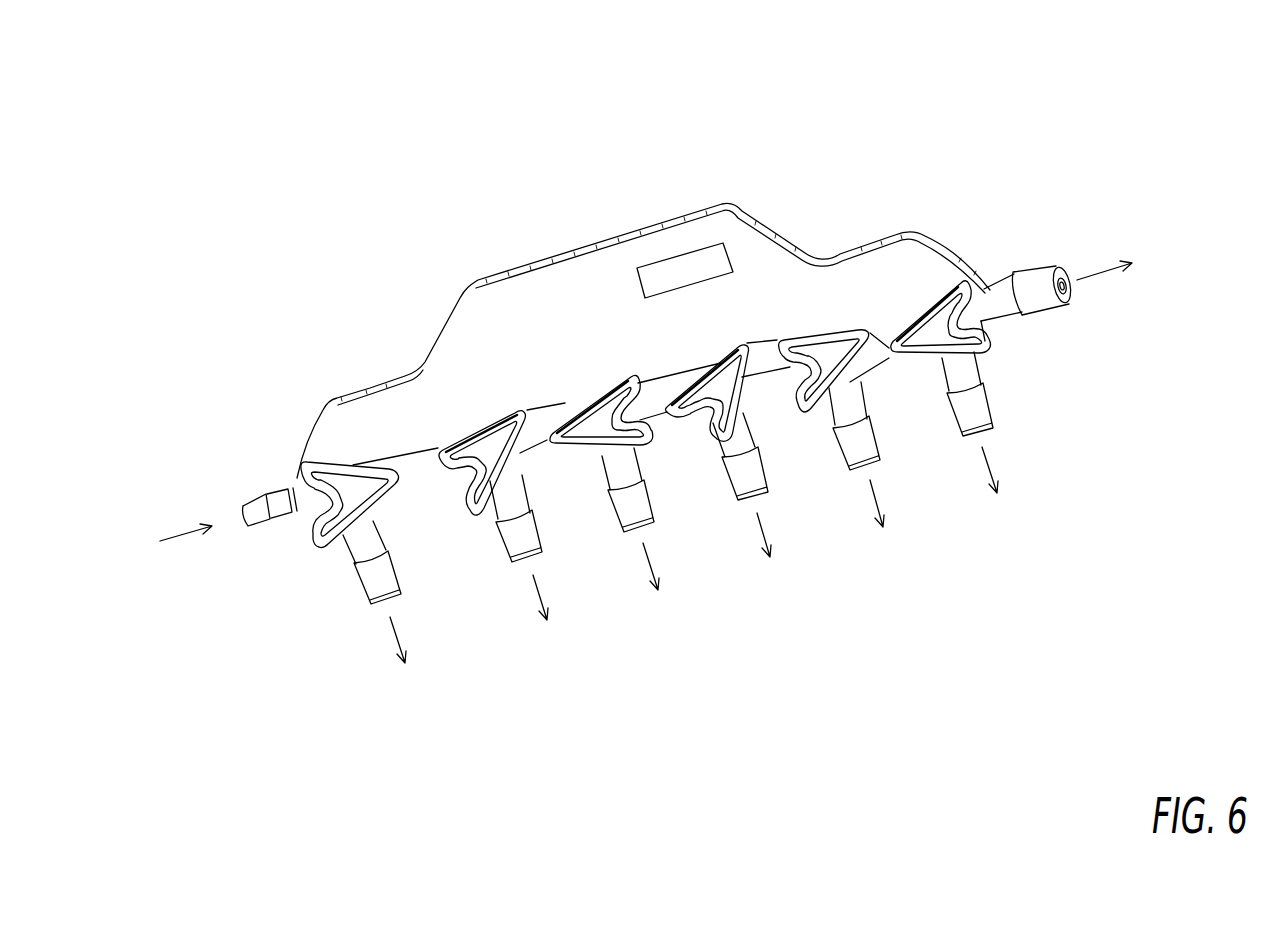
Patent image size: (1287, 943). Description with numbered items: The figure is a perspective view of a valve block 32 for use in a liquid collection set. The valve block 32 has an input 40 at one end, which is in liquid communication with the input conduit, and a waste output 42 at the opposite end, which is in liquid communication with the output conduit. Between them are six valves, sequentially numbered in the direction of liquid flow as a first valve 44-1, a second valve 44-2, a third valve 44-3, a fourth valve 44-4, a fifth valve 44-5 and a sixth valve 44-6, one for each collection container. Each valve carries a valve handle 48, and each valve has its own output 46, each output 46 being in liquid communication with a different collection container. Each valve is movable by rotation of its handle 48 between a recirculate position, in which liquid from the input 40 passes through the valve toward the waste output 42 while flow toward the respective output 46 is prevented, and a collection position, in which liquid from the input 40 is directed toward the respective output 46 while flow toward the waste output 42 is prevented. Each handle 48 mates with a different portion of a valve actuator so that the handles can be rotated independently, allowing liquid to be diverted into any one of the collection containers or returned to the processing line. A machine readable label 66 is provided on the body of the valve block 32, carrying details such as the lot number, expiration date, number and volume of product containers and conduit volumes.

The valve block 32 is at (940, 111).
The input 40 is at (264, 524).
The waste output 42 is at (1052, 312).
The first valve 44-1 is at (352, 462).
The second valve 44-2 is at (476, 430).
The third valve 44-3 is at (589, 407).
The fourth valve 44-4 is at (700, 375).
The fifth valve 44-5 is at (835, 336).
The sixth valve 44-6 is at (950, 275).
The output 46 is at (370, 585).
The valve handle 48 is at (358, 506).
The machine readable label 66 is at (714, 256).